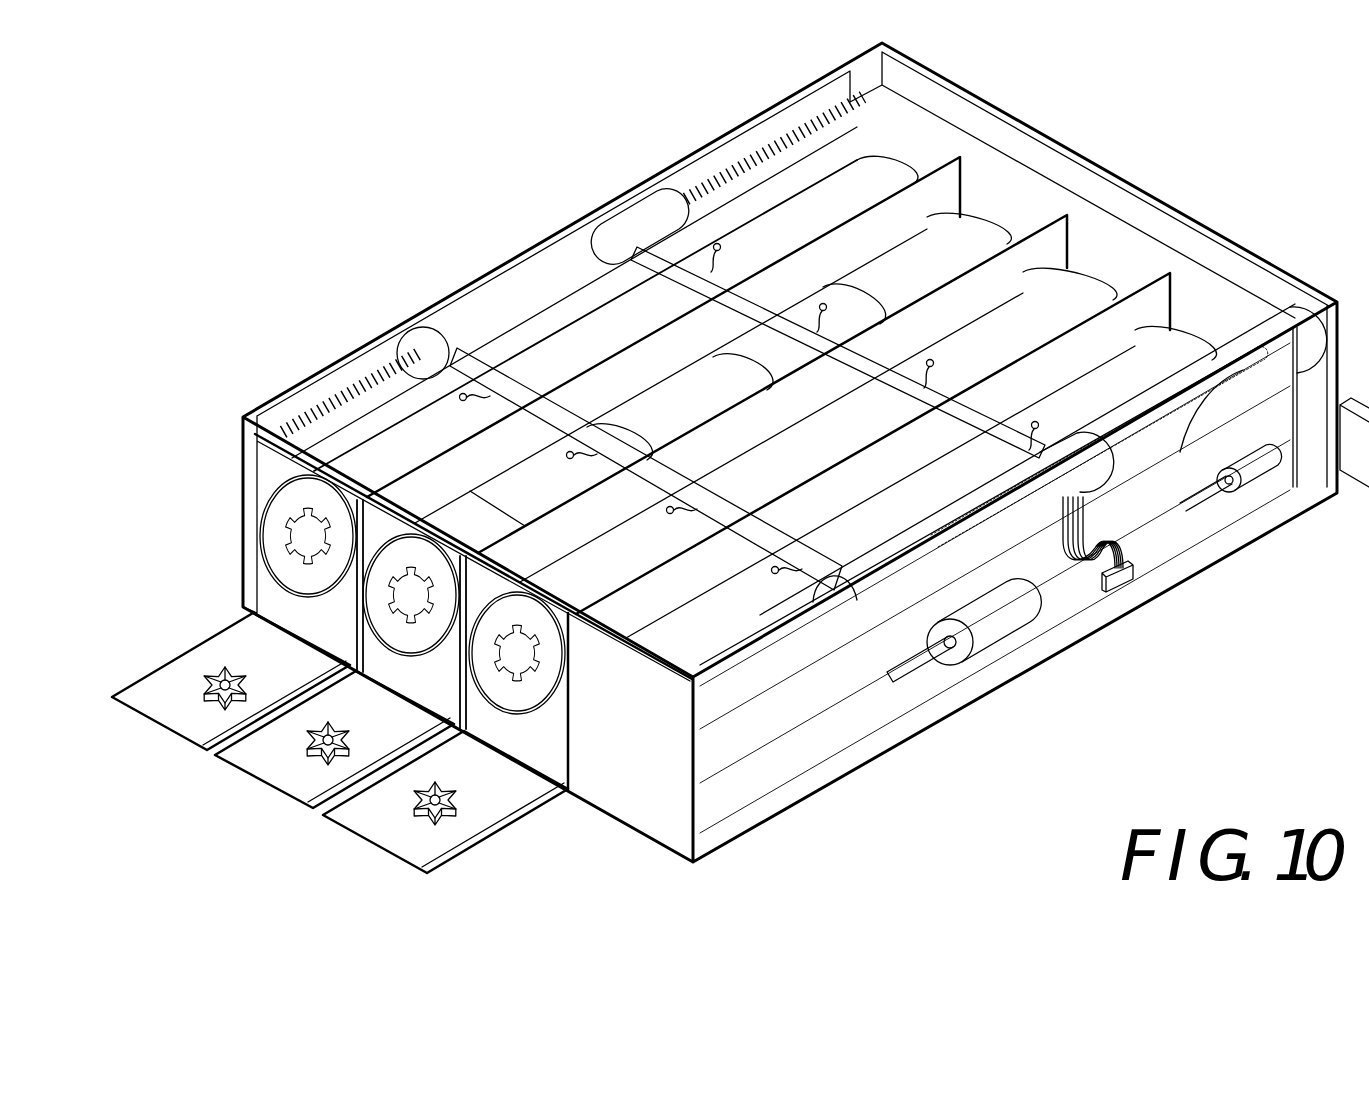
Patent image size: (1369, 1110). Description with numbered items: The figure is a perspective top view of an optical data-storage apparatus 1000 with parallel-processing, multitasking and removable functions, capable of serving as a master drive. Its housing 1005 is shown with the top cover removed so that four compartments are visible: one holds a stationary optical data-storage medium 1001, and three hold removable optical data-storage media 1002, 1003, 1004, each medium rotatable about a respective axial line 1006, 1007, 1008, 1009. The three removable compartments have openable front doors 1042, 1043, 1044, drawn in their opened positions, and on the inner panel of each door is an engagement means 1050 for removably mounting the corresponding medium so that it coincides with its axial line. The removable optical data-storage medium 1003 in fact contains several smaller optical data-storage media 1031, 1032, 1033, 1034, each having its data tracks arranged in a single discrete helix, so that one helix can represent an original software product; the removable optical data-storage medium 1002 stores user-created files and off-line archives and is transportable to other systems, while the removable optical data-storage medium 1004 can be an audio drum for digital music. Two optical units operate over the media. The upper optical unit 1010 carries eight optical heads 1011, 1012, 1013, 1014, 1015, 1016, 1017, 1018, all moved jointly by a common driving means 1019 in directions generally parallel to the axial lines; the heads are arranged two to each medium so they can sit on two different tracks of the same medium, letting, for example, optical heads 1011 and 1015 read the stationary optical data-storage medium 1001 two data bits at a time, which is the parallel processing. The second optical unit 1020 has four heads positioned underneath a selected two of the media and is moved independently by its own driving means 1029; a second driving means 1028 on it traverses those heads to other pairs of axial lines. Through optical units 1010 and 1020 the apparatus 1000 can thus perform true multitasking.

The optical data-storage apparatus 1000 is at (1140, 749).
The stationary optical data-storage medium 1001 is at (1215, 335).
The removable optical data-storage medium 1002 is at (1103, 287).
The removable optical data-storage medium 1003 is at (1000, 227).
The removable optical data-storage medium 1004 is at (893, 167).
The housing 1005 is at (238, 418).
The axial line 1006 is at (637, 708).
The axial line 1007 is at (527, 648).
The axial line 1008 is at (422, 585).
The axial line 1009 is at (322, 528).
The optical unit 1010 is at (1132, 479).
The optical head 1011 is at (1039, 424).
The optical head 1012 is at (934, 362).
The optical head 1013 is at (822, 303).
The optical head 1014 is at (721, 246).
The optical head 1015 is at (775, 574).
The optical head 1016 is at (670, 514).
The optical head 1017 is at (570, 459).
The optical head 1018 is at (463, 401).
The driving means 1019 is at (565, 253).
The optical unit 1020 is at (1045, 622).
The second driving means 1028 is at (1270, 480).
The driving means 1029 is at (1000, 652).
The optical data-storage medium 1031 is at (919, 305).
The optical data-storage medium 1032 is at (794, 370).
The optical data-storage medium 1033 is at (684, 435).
The optical data-storage medium 1034 is at (514, 533).
The openable front door 1042 is at (468, 849).
The openable front door 1043 is at (242, 772).
The openable front door 1044 is at (133, 718).
The engagement means 1050 is at (413, 817).